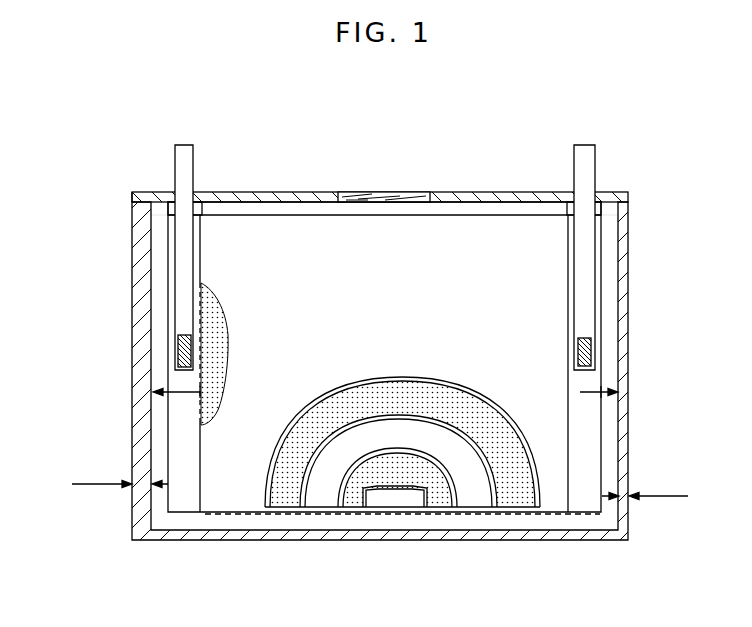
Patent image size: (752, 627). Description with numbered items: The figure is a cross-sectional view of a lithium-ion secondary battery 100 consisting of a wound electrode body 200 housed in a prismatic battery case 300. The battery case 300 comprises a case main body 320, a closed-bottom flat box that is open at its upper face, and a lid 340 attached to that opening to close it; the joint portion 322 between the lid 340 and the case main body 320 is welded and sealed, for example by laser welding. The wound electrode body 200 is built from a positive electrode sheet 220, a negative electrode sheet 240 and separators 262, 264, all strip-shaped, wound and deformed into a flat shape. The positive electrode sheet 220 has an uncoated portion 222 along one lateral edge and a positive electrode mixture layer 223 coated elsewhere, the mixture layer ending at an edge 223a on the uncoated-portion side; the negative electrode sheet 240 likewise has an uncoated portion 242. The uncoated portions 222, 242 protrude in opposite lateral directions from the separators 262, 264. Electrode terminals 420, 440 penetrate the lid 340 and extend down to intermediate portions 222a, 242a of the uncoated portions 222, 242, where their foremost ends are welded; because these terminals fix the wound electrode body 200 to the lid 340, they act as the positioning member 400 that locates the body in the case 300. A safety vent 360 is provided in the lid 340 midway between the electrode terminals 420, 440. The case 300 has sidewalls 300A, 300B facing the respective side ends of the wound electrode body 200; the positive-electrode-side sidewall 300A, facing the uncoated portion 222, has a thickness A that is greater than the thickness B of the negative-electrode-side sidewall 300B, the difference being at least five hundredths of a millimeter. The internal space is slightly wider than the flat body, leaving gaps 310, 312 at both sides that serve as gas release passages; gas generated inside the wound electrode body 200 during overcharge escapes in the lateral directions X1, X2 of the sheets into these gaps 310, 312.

The lithium-ion secondary battery 100 is at (368, 344).
The wound electrode body 200 is at (395, 371).
The positive electrode sheet 220 is at (285, 500).
The uncoated portion 222 is at (180, 492).
The intermediate portion 222a is at (125, 348).
The positive electrode mixture layer 223 is at (228, 327).
The edge of the positive electrode mixture layer 223a is at (203, 300).
The negative electrode sheet 240 is at (353, 498).
The uncoated portion 242 is at (590, 421).
The intermediate portion 242a is at (640, 347).
The separator 262 is at (233, 455).
The separator 264 is at (325, 498).
The battery case 300 is at (390, 371).
The sidewall 300A is at (146, 408).
The sidewall 300B is at (623, 412).
The gap 310 is at (118, 257).
The gap 312 is at (646, 248).
The case main body 320 is at (631, 517).
The joint portion 322 is at (77, 194).
The lid 340 is at (512, 192).
The safety vent 360 is at (383, 191).
The positioning member 400 is at (381, 226).
The electrode terminal 420 is at (185, 144).
The electrode terminal 440 is at (585, 144).
The lateral direction X1 is at (175, 390).
The lateral direction X2 is at (585, 391).
The thickness of sidewall 300A A is at (120, 475).
The thickness of sidewall 300B B is at (645, 486).